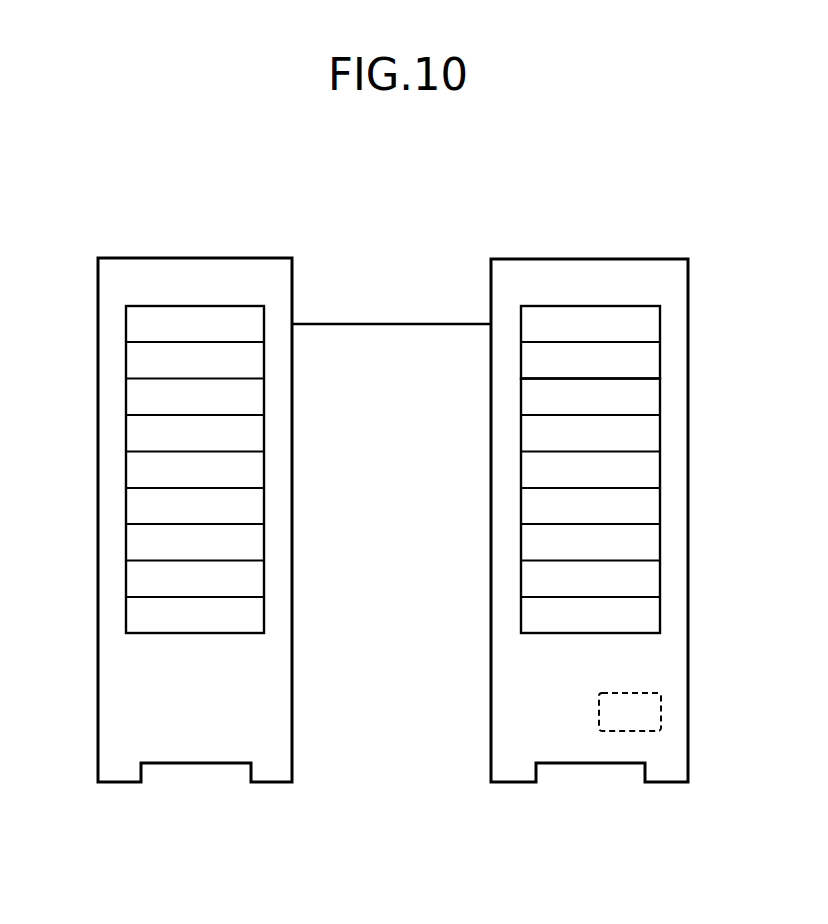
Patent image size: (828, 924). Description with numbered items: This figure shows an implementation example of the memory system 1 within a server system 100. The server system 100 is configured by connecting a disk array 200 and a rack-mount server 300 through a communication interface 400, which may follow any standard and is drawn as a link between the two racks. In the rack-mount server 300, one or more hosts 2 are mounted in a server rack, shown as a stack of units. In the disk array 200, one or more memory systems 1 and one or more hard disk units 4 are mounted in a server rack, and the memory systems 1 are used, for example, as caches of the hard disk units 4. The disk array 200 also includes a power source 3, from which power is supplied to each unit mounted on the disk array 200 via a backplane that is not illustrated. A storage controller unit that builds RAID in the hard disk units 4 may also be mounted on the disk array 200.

The server system 100 is at (614, 176).
The disk array 200 is at (628, 259).
The rack-mount server 300 is at (233, 258).
The communication interface 400 is at (392, 324).
The memory system 1 is at (660, 321).
The host 2 is at (126, 321).
The power source 3 is at (661, 710).
The hard disk unit 4 is at (660, 394).